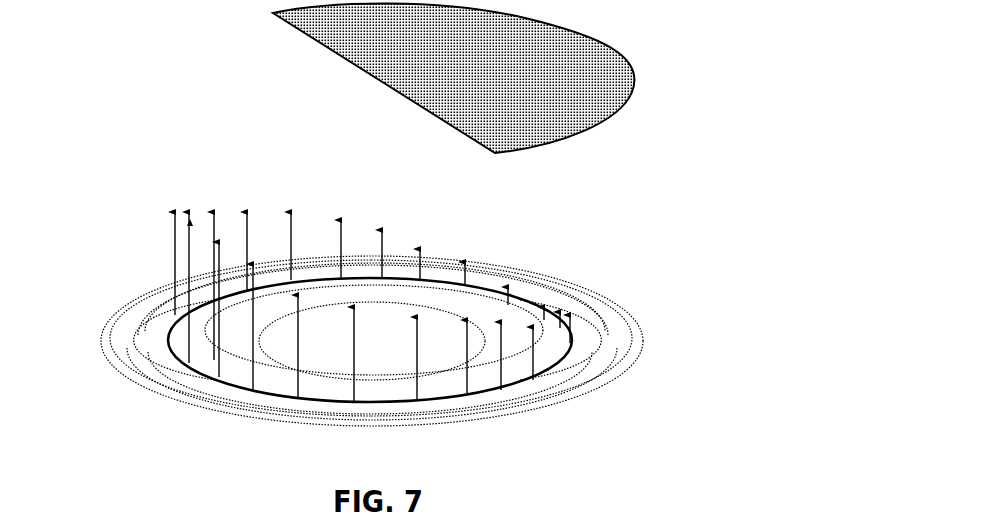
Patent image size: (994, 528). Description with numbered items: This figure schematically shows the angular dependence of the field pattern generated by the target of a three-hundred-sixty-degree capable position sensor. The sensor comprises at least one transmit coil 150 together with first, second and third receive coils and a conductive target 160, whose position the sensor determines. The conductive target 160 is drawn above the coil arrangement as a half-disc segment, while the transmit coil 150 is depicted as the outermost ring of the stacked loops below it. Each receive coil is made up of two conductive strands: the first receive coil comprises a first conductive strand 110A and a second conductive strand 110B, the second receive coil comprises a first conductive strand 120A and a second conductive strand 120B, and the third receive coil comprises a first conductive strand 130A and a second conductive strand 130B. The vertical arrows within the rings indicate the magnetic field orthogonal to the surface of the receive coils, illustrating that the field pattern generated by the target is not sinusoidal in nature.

The conductive target 160 is at (622, 58).
The transmit coil 150 is at (633, 322).
The first conductive strand 110A is at (610, 312).
The second conductive strand 110B is at (115, 333).
The first conductive strand 120A is at (492, 270).
The second conductive strand 120B is at (233, 408).
The first conductive strand 130A is at (263, 265).
The second conductive strand 130B is at (527, 407).